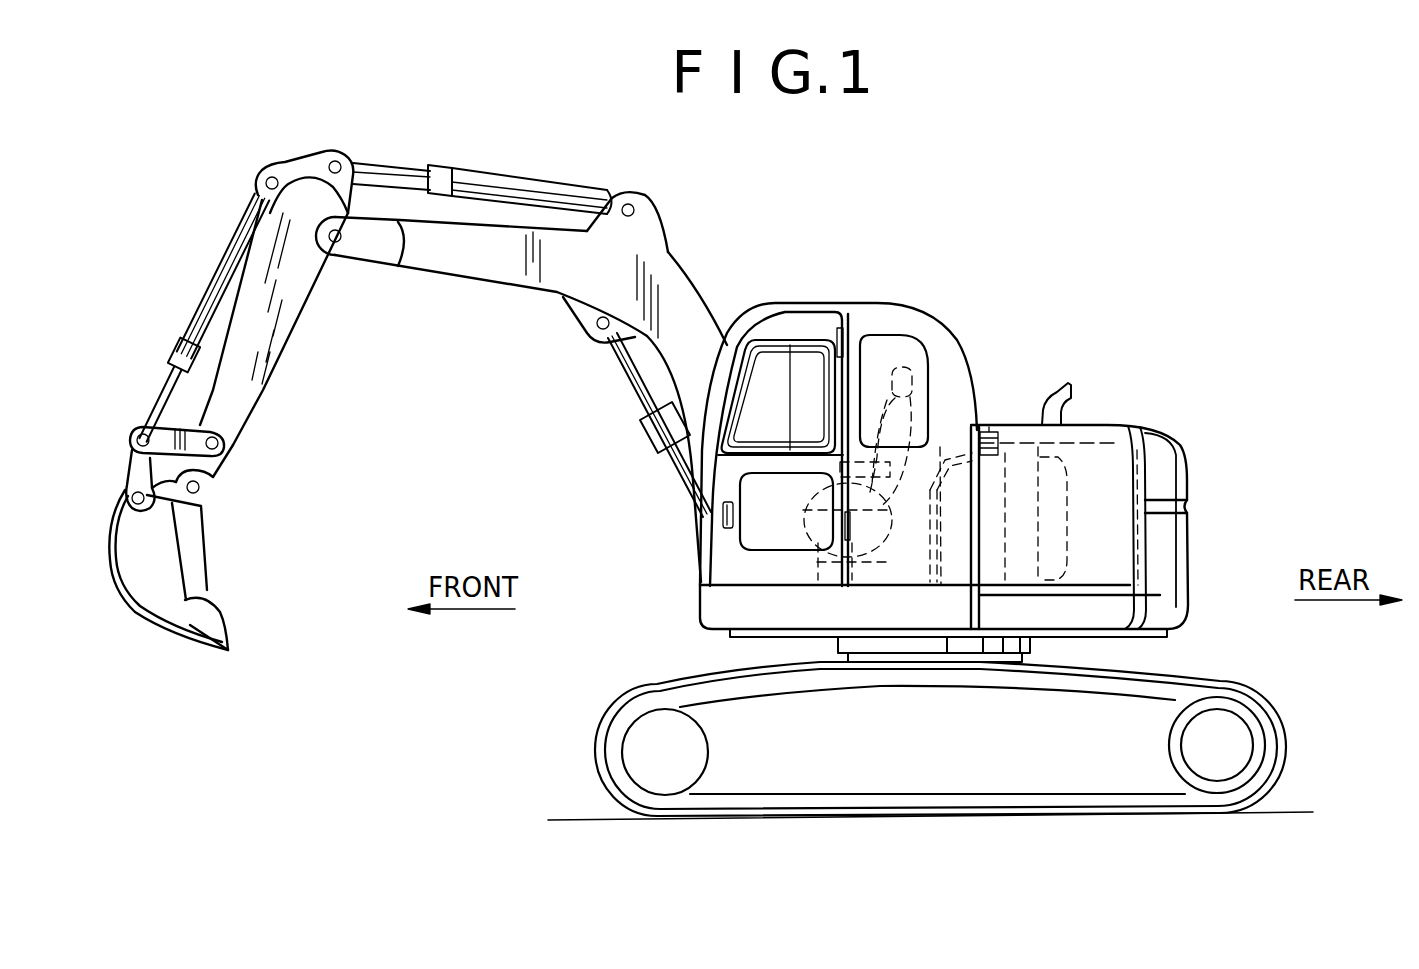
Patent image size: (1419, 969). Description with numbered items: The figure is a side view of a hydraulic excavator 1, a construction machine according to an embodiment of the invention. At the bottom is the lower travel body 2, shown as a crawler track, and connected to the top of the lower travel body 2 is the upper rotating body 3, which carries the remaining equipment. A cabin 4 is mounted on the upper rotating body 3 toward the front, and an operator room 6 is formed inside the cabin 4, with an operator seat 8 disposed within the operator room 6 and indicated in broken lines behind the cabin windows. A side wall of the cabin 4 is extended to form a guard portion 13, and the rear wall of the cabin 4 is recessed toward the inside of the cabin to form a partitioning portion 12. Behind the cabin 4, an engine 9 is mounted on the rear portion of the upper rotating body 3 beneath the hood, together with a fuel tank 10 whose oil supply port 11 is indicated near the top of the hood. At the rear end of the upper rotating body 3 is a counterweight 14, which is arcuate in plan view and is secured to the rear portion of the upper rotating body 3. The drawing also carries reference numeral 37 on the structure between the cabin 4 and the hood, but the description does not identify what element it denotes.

The hydraulic excavator 1 is at (1118, 329).
The lower travel body 2 is at (1282, 709).
The upper rotating body 3 is at (1138, 423).
The cabin 4 is at (781, 300).
The operator room 6 is at (912, 535).
The operator seat 8 is at (887, 400).
The engine 9 is at (1135, 540).
The fuel tank 10 is at (1005, 455).
The oil supply port 11 is at (985, 455).
The partitioning portion 12 is at (948, 585).
The guard portion 13 is at (943, 535).
The counterweight 14 is at (1183, 468).
The pillar 37 is at (972, 425).